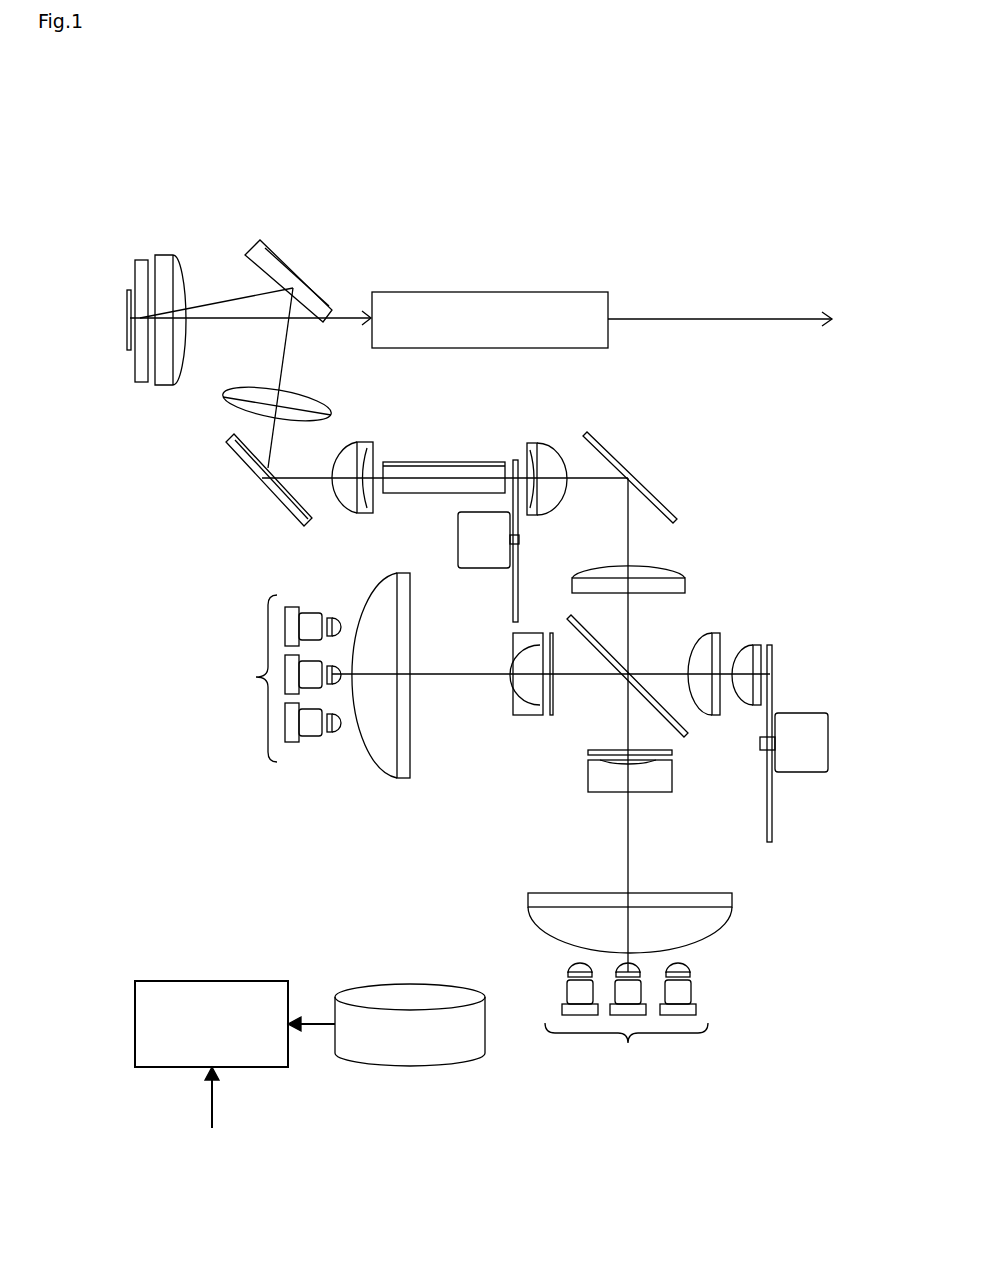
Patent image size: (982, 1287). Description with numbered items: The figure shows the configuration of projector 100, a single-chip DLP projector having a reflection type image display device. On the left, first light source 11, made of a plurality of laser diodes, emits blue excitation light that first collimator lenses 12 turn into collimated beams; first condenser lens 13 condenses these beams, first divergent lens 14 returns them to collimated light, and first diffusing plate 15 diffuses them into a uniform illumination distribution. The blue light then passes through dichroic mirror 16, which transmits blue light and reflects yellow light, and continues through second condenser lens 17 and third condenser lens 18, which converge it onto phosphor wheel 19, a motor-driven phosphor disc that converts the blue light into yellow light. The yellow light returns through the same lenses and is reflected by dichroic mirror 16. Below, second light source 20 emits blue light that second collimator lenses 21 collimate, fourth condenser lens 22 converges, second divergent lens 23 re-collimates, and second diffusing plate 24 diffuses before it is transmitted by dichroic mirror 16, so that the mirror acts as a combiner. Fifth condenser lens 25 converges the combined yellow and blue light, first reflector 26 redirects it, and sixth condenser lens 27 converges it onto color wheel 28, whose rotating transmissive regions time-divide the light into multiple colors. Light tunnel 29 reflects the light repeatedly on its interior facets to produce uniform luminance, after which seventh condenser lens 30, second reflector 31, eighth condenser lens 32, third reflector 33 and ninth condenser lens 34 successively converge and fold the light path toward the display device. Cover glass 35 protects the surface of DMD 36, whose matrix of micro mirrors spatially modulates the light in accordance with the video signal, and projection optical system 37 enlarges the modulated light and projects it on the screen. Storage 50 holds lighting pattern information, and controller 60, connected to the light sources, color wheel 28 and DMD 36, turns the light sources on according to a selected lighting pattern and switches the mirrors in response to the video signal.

The projector 100 is at (495, 159).
The first light source 11 is at (279, 706).
The first collimator lenses 12 is at (330, 738).
The first condenser lens 13 is at (393, 773).
The first divergent lens 14 is at (514, 716).
The first diffusing plate 15 is at (551, 716).
The dichroic mirror 16 is at (688, 737).
The second condenser lens 17 is at (713, 632).
The third condenser lens 18 is at (756, 645).
The phosphor wheel 19 is at (772, 822).
The second light source 20 is at (670, 1025).
The second collimator lenses 21 is at (690, 966).
The fourth condenser lens 22 is at (730, 912).
The second divergent lens 23 is at (650, 792).
The second diffusing plate 24 is at (672, 754).
The fifth condenser lens 25 is at (680, 572).
The first reflector 26 is at (660, 500).
The sixth condenser lens 27 is at (530, 440).
The color wheel 28 is at (513, 575).
The light tunnel 29 is at (420, 462).
The seventh condenser lens 30 is at (360, 440).
The second reflector 31 is at (255, 463).
The eighth condenser lens 32 is at (222, 400).
The third reflector 33 is at (292, 250).
The ninth condenser lens 34 is at (162, 252).
The cover glass 35 is at (140, 258).
The DMD 36 is at (127, 342).
The projection optical system 37 is at (508, 292).
The storage 50 is at (420, 988).
The controller 60 is at (220, 981).